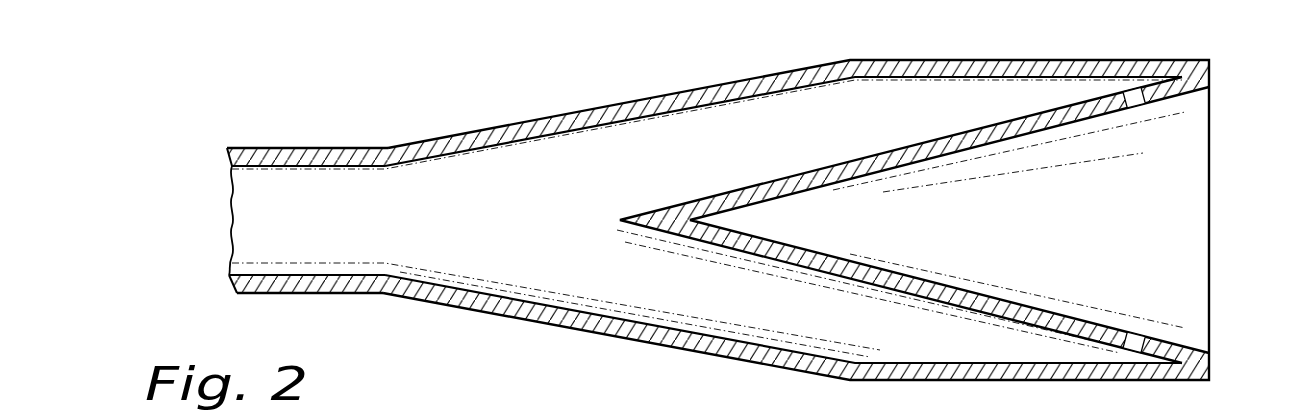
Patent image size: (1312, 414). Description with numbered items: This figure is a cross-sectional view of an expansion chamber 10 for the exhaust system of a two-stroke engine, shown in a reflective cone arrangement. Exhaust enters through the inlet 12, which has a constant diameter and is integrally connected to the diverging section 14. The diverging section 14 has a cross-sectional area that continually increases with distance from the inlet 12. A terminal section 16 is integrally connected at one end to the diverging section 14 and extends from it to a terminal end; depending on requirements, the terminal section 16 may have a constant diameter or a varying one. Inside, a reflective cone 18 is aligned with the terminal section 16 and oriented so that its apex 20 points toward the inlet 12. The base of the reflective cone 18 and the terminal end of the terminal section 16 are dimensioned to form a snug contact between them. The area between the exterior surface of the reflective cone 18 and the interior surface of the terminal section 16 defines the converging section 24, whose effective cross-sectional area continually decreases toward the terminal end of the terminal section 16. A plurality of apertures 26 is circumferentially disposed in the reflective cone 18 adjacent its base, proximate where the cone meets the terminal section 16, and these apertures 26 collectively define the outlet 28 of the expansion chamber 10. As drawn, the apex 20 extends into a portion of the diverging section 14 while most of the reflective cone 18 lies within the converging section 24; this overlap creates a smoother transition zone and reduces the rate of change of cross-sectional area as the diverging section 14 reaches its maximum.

The expansion chamber 10 is at (762, 215).
The inlet 12 is at (238, 148).
The diverging section 14 is at (349, 223).
The terminal section 16 is at (900, 60).
The reflective cone 18 is at (954, 245).
The apex 20 is at (583, 231).
The converging section 24 is at (790, 160).
The apertures 26 is at (1142, 122).
The outlet 28 is at (1247, 208).